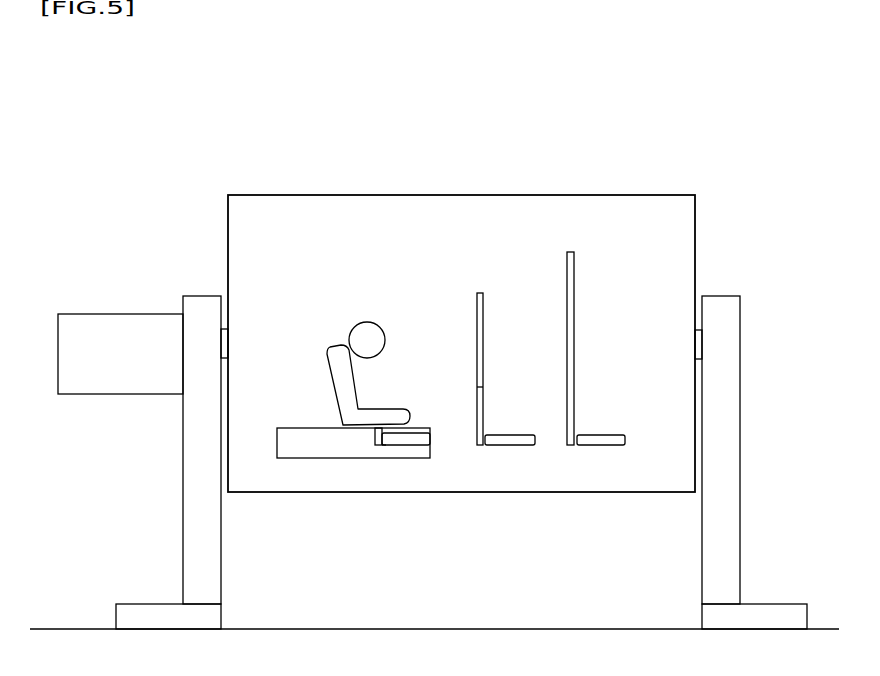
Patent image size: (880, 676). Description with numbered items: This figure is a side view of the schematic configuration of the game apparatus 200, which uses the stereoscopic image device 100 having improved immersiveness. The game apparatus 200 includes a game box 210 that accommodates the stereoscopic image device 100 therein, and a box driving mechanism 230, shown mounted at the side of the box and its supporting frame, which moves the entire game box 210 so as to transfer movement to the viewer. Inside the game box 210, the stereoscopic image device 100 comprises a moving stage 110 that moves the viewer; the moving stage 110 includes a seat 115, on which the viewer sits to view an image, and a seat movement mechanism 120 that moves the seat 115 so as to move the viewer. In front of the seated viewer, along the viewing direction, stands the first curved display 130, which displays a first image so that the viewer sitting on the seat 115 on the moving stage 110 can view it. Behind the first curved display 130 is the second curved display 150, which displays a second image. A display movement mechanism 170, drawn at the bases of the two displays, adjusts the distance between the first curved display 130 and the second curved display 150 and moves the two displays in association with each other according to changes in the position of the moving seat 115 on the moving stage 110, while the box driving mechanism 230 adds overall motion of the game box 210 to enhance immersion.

The stereoscopic image device 100 is at (450, 358).
The moving stage 110 is at (310, 443).
The seat 115 is at (342, 390).
The seat movement mechanism 120 is at (405, 441).
The first curved display 130 is at (476, 330).
The second curved display 150 is at (565, 287).
The display movement mechanism 170 is at (598, 445).
The game apparatus 200 is at (214, 124).
The game box 210 is at (347, 195).
The box driving mechanism 230 is at (118, 330).